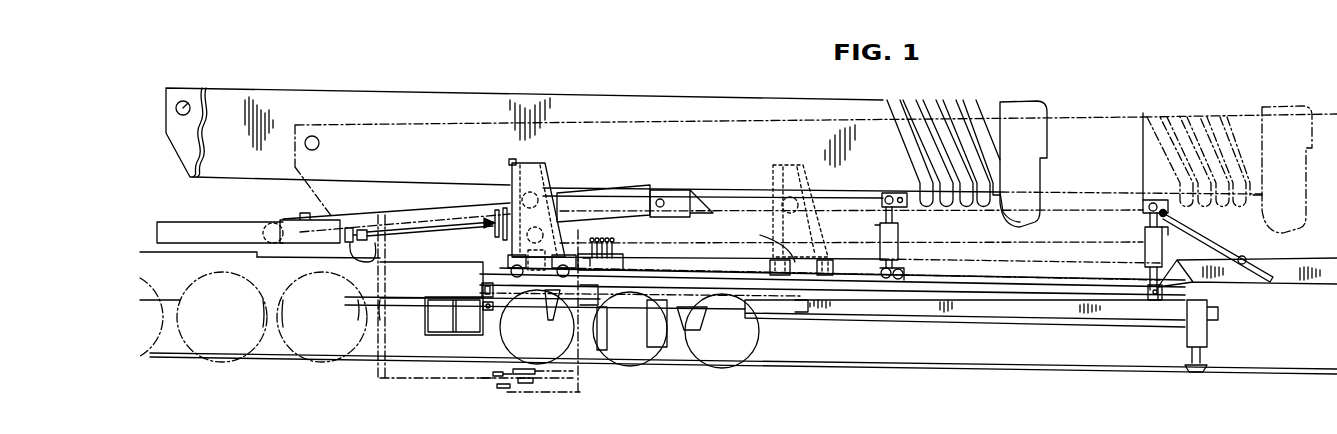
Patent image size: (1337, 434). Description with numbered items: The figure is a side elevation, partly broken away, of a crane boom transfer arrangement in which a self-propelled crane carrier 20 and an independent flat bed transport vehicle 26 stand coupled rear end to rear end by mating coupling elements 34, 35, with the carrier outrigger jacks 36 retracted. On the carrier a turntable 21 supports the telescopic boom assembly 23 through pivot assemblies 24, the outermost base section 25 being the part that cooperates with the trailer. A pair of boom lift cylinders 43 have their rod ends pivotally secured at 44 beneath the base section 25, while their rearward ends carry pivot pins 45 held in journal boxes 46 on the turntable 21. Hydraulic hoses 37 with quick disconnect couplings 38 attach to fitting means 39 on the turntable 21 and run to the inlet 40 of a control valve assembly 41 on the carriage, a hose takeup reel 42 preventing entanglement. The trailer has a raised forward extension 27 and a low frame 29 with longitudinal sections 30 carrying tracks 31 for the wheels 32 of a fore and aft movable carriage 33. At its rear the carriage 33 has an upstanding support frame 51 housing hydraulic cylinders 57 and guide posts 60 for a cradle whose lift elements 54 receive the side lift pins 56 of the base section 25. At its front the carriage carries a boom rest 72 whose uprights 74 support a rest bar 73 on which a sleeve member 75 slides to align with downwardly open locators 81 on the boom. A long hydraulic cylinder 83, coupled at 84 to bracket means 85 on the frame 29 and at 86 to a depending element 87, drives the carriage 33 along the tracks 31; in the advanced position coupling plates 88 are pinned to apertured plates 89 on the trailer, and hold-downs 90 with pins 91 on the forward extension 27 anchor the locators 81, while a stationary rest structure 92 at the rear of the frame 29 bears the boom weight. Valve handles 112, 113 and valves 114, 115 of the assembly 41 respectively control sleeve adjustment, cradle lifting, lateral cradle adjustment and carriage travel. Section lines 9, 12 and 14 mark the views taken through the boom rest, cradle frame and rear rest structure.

The section line 9- 9 is at (800, 160).
The section line 12- 12 is at (588, 140).
The section line 14- 14 is at (493, 205).
The self-propelled carrier 20 is at (400, 296).
The turntable 21 is at (230, 225).
The telescopic boom assembly 23 is at (355, 93).
The pivot assemblies 24 is at (187, 93).
The base section 25 is at (443, 97).
The transport vehicle 26 is at (872, 318).
The forward extension 27 is at (1305, 260).
The support frame 29 is at (699, 270).
The longitudinal sections 30 is at (745, 320).
The longitudinal tracks 31 is at (935, 300).
The wheels 32 is at (1112, 277).
The carriage 33 is at (1017, 258).
The coupling element 34 is at (468, 289).
The coupling element 35 is at (491, 312).
The outrigger jacks 36 is at (465, 322).
The hydraulic hoses 37 is at (378, 364).
The quick disconnect couplings 38 is at (372, 240).
The hydraulic fitting means 39 is at (352, 246).
The inlet 40 is at (593, 242).
The control valve assembly 41 is at (605, 312).
The hose takeup reel 42 is at (510, 386).
The boom lift cylinders 43 is at (387, 220).
The pivotal connection 44 is at (662, 199).
The pivot pins 45 is at (274, 223).
The journal boxes 46 is at (283, 247).
The support frame 51 is at (512, 162).
The lift elements 54 is at (512, 182).
The lift pins 56 is at (520, 162).
The hydraulic cylinders 57 is at (568, 192).
The guide posts 60 is at (540, 180).
The boom rest 72 is at (887, 245).
The boom rest bar 73 is at (885, 200).
The uprights 74 is at (880, 228).
The sleeve member 75 is at (888, 195).
The locators 81 is at (900, 195).
The hydraulic cylinder 83 is at (745, 272).
The rod end coupling 84 is at (539, 312).
The bracket means 85 is at (481, 286).
The cylinder end coupling 86 is at (803, 310).
The depending element 87 is at (766, 242).
The coupling plates 88 is at (904, 270).
The apertured plates 89 is at (1187, 322).
The hold-downs 90 is at (1213, 240).
The pins 91 is at (1171, 242).
The rest structure 92 is at (485, 232).
The lateral control valve handle 112 is at (605, 240).
The control valve handle 113 is at (600, 238).
The control valve 114 is at (610, 268).
The control valve 115 is at (638, 237).